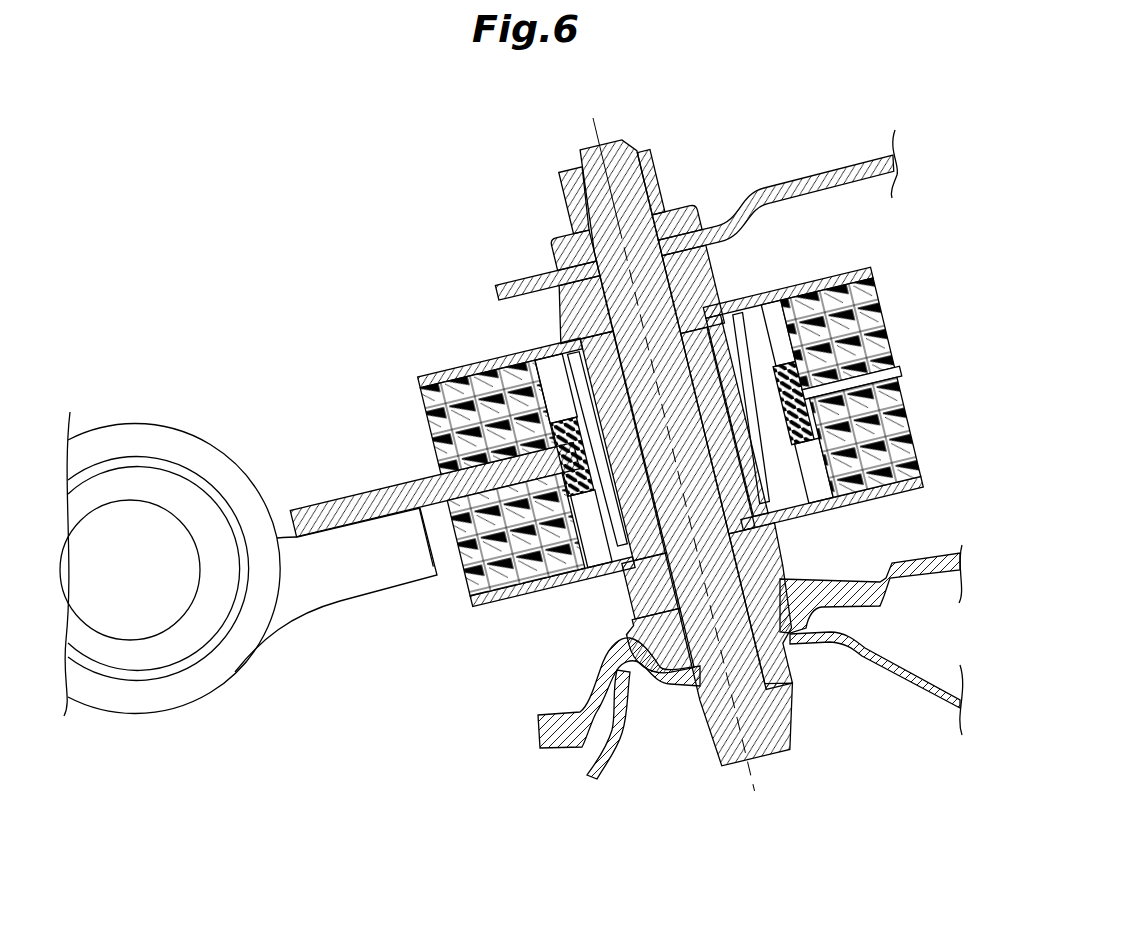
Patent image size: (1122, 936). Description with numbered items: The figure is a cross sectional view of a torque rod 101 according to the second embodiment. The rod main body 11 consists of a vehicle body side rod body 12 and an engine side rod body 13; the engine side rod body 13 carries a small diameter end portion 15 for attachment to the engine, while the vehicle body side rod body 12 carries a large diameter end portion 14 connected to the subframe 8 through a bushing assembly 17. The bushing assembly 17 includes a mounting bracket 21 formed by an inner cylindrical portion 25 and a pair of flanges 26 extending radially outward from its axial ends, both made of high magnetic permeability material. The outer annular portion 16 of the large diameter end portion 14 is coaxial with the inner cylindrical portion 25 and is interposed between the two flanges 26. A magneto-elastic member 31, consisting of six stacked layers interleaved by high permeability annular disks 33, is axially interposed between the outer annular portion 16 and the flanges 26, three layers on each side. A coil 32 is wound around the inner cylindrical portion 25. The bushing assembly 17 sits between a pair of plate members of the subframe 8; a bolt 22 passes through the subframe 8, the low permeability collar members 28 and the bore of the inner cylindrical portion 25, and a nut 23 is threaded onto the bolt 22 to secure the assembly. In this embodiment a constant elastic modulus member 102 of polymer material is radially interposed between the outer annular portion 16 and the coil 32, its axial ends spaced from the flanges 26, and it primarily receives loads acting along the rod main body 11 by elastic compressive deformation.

The subframe 8 is at (814, 170).
The rod main body 11 is at (357, 494).
The vehicle body side rod body 12 is at (402, 488).
The engine side rod body 13 is at (340, 596).
The large diameter end portion 14 is at (456, 502).
The small diameter end portion 15 is at (176, 412).
The outer annular portion 16 is at (902, 380).
The bushing assembly 17 is at (500, 479).
The mounting bracket 21 is at (516, 610).
The bolt 22 is at (590, 148).
The nut 23 is at (562, 210).
The inner cylindrical portion 25 is at (755, 488).
The flanges 26 is at (838, 272).
The collar member 28 is at (556, 305).
The magneto-elastic member 31 is at (896, 322).
The coil 32 is at (558, 362).
The annular disks 33 is at (918, 448).
The torque rod 101 is at (301, 262).
The constant elastic modulus member 102 is at (772, 368).